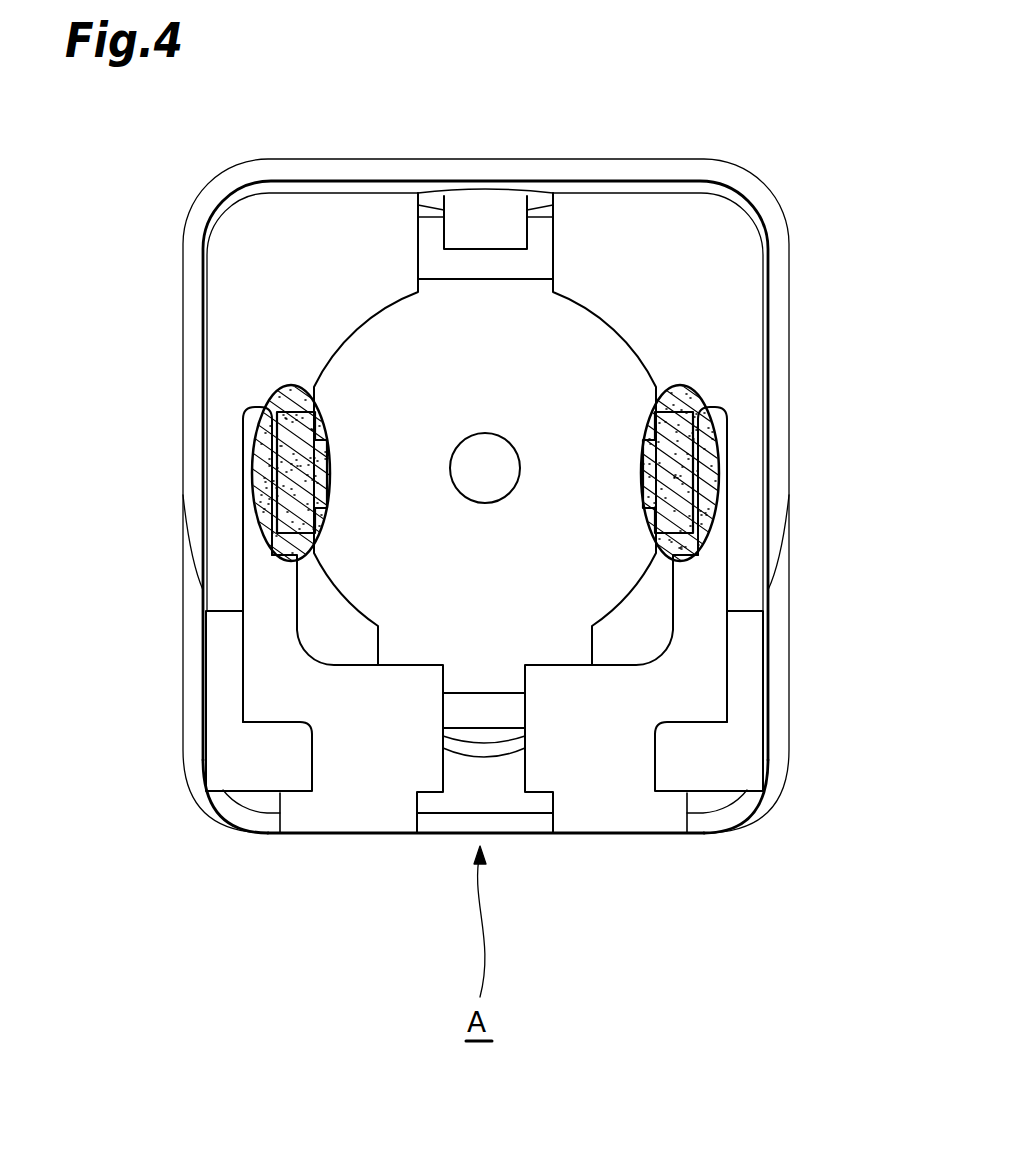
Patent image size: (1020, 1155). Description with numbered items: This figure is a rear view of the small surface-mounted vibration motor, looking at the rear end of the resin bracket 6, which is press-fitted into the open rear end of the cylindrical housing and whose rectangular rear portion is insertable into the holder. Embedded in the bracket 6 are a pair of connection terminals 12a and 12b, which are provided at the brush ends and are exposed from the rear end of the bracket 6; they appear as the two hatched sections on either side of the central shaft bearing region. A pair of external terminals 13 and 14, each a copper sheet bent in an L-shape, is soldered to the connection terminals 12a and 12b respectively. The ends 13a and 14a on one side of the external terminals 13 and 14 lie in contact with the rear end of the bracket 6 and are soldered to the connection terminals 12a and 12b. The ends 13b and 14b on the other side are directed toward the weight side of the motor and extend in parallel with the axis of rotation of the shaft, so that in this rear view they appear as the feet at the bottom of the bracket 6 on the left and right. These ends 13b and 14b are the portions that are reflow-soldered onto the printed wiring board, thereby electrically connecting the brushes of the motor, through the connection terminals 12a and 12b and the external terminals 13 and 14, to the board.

The bracket 6 is at (683, 232).
The connection terminal 12a is at (690, 391).
The connection terminal 12b is at (295, 387).
The external terminal 13 is at (730, 472).
The end of external terminal 13a is at (728, 556).
The end of external terminal 13b is at (648, 836).
The external terminal 14 is at (233, 425).
The end of external terminal 14a is at (243, 550).
The end of external terminal 14b is at (365, 836).